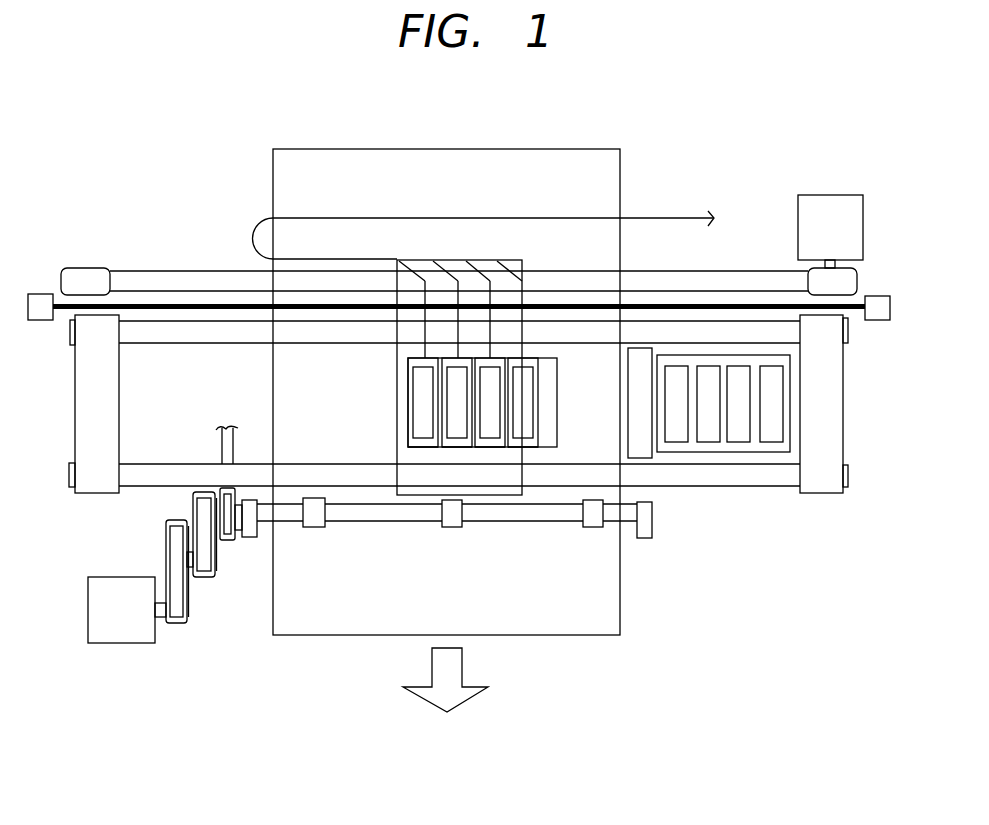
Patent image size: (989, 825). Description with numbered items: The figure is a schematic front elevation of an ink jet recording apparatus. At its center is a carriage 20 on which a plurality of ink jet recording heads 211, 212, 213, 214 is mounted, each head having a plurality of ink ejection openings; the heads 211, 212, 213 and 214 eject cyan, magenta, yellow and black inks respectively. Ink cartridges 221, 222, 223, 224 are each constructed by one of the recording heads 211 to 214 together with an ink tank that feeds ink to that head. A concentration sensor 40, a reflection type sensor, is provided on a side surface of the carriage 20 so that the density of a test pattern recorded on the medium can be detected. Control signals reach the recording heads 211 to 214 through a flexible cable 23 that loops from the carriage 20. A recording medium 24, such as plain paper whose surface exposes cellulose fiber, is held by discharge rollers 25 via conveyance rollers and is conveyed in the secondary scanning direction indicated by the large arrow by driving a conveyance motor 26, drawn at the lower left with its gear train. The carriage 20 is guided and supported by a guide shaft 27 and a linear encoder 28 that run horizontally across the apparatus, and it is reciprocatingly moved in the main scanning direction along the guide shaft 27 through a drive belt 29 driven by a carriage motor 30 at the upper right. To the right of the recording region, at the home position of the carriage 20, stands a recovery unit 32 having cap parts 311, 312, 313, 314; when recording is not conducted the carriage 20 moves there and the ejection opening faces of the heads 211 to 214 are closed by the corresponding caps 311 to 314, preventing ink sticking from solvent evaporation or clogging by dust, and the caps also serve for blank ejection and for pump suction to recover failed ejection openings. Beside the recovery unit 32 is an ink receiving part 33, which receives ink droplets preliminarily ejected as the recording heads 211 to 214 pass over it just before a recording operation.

The carriage 20 is at (405, 456).
The flexible cable 23 is at (255, 231).
The recording medium 24 is at (525, 149).
The discharge rollers 25 is at (349, 522).
The conveyance motor 26 is at (124, 643).
The guide shaft 27 is at (166, 338).
The linear encoder 28 is at (222, 310).
The drive belt 29 is at (137, 270).
The carriage motor 30 is at (830, 195).
The recovery unit 32 is at (665, 450).
The ink receiving part 33 is at (641, 458).
The concentration sensor 40 is at (548, 372).
The recording head 211 is at (425, 450).
The recording head 212 is at (455, 450).
The recording head 213 is at (487, 450).
The recording head 214 is at (520, 450).
The ink cartridge 221 is at (420, 372).
The ink cartridge 222 is at (455, 396).
The ink cartridge 223 is at (487, 421).
The ink cartridge 224 is at (520, 411).
The cap part 311 is at (676, 432).
The cap part 312 is at (708, 432).
The cap part 313 is at (738, 432).
The cap part 314 is at (769, 432).